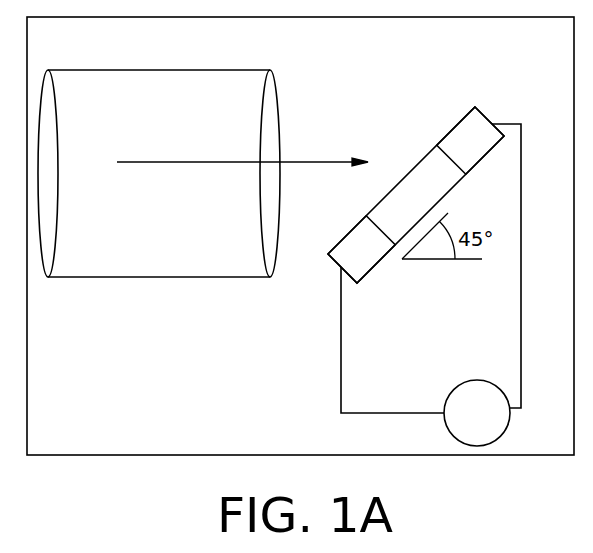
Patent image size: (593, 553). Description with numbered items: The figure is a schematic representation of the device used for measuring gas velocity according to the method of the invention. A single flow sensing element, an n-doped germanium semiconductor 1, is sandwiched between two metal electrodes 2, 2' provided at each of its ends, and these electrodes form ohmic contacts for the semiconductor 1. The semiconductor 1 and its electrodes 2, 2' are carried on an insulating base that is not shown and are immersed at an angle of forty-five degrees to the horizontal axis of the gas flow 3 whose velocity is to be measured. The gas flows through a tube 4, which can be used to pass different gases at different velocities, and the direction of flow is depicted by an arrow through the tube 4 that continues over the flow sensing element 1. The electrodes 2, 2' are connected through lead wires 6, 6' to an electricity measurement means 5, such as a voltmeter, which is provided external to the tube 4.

The flow sensing element 1 is at (413, 169).
The metal electrode 2 is at (470, 122).
The metal electrode 2' is at (349, 240).
The gas flow 3 is at (307, 162).
The tube 4 is at (140, 70).
The electricity measurement means 5 is at (510, 419).
The lead wire 6 is at (529, 261).
The lead wire 6' is at (364, 340).